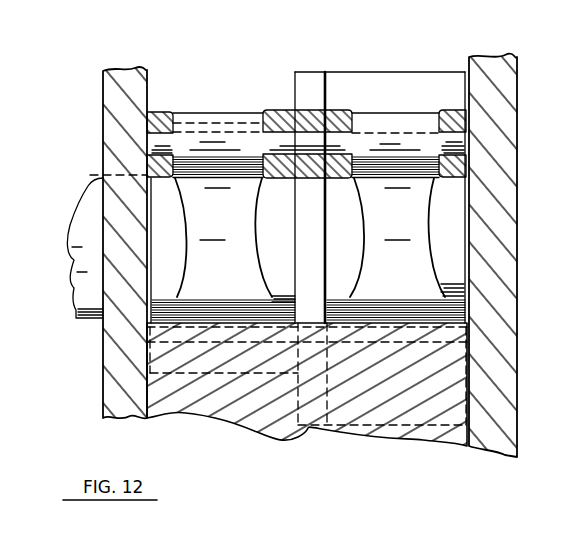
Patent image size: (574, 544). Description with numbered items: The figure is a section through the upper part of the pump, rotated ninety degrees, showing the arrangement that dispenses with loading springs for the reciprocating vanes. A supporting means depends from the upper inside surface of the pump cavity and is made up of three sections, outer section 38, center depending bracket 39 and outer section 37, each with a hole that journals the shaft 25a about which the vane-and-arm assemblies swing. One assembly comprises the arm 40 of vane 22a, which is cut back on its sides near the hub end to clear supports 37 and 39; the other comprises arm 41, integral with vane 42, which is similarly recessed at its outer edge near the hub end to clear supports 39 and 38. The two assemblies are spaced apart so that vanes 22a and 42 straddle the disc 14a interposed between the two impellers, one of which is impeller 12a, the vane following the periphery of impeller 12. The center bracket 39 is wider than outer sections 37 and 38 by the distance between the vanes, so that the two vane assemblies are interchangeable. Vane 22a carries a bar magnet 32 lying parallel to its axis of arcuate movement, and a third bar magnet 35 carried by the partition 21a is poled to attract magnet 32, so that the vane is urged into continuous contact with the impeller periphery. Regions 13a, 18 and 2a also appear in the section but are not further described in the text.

The impeller 12 is at (422, 58).
The impeller 12a is at (366, 87).
The disc 14a is at (308, 88).
The inner race portion 13a is at (208, 122).
The outer section of supporting means 38 is at (160, 108).
The center depending bracket 39 is at (268, 110).
The outer section of supporting means 37 is at (440, 110).
The shaft 25a is at (455, 142).
The shaft end 18 is at (92, 190).
The housing wall 2a is at (500, 230).
The arm 41 is at (223, 237).
The arm 40 is at (397, 237).
The vane 42 is at (283, 298).
The vane 22a is at (447, 282).
The bar magnet 32 is at (423, 310).
The third bar magnet 35 is at (457, 337).
The partition 21a is at (233, 397).